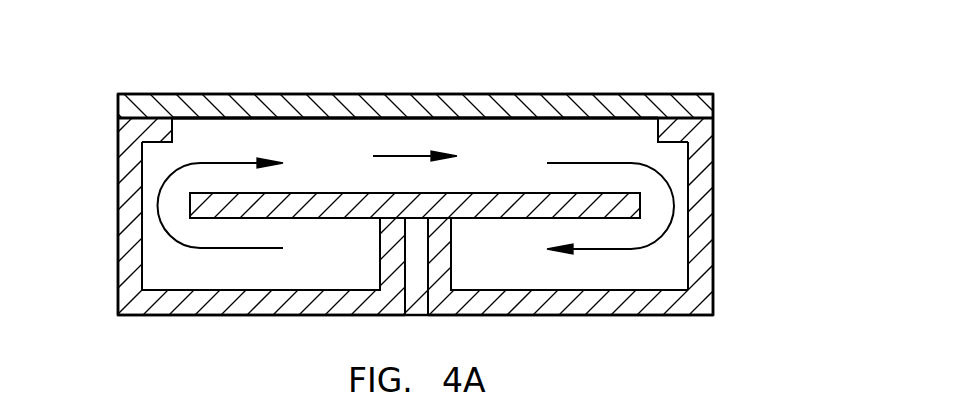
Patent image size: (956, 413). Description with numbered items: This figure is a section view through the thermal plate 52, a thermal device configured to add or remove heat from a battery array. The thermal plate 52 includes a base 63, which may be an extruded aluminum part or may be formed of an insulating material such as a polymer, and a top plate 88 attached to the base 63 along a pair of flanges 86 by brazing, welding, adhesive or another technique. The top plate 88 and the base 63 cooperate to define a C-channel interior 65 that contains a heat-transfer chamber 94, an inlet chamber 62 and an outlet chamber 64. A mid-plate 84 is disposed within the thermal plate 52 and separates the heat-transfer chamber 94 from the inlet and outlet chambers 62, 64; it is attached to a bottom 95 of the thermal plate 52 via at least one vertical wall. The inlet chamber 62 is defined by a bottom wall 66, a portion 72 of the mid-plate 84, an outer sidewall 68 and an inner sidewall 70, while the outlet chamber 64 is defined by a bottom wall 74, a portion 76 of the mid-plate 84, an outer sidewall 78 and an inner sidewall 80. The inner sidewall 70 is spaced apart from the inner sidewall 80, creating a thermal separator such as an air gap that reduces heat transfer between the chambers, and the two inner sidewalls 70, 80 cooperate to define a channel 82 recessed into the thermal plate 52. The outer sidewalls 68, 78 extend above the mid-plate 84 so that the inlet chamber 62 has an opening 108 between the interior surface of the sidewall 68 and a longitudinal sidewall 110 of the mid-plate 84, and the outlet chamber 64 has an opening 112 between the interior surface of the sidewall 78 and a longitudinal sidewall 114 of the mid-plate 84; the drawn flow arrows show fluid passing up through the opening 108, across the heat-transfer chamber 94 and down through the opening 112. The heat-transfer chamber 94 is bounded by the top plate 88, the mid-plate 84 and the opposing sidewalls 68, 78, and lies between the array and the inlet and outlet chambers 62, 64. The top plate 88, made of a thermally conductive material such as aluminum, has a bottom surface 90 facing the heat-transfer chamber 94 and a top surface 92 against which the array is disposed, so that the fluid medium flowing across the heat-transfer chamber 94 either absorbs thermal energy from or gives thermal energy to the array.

The thermal plate 52 is at (762, 102).
The inlet chamber 62 is at (300, 263).
The base 63 is at (713, 200).
The outlet chamber 64 is at (494, 262).
The C-channel interior 65 is at (675, 157).
The bottom wall 66 is at (202, 303).
The outer sidewall 68 is at (128, 248).
The inner sidewall 70 is at (388, 258).
The portion of the mid-plate 72 is at (322, 200).
The bottom wall 74 is at (567, 305).
The portion of the mid-plate 76 is at (520, 200).
The outer sidewall 78 is at (713, 252).
The inner sidewall 80 is at (440, 256).
The channel 82 is at (414, 316).
The mid-plate 84 is at (299, 200).
The flanges 86 is at (155, 130).
The top plate 88 is at (240, 94).
The bottom surface of the top plate 90 is at (363, 119).
The top surface of the top plate 92 is at (432, 94).
The heat-transfer chamber 94 is at (482, 152).
The bottom 95 is at (295, 303).
The opening 108 is at (170, 158).
The longitudinal sidewall of the mid-plate 110 is at (186, 212).
The opening 112 is at (654, 158).
The longitudinal sidewall of the mid-plate 114 is at (642, 205).